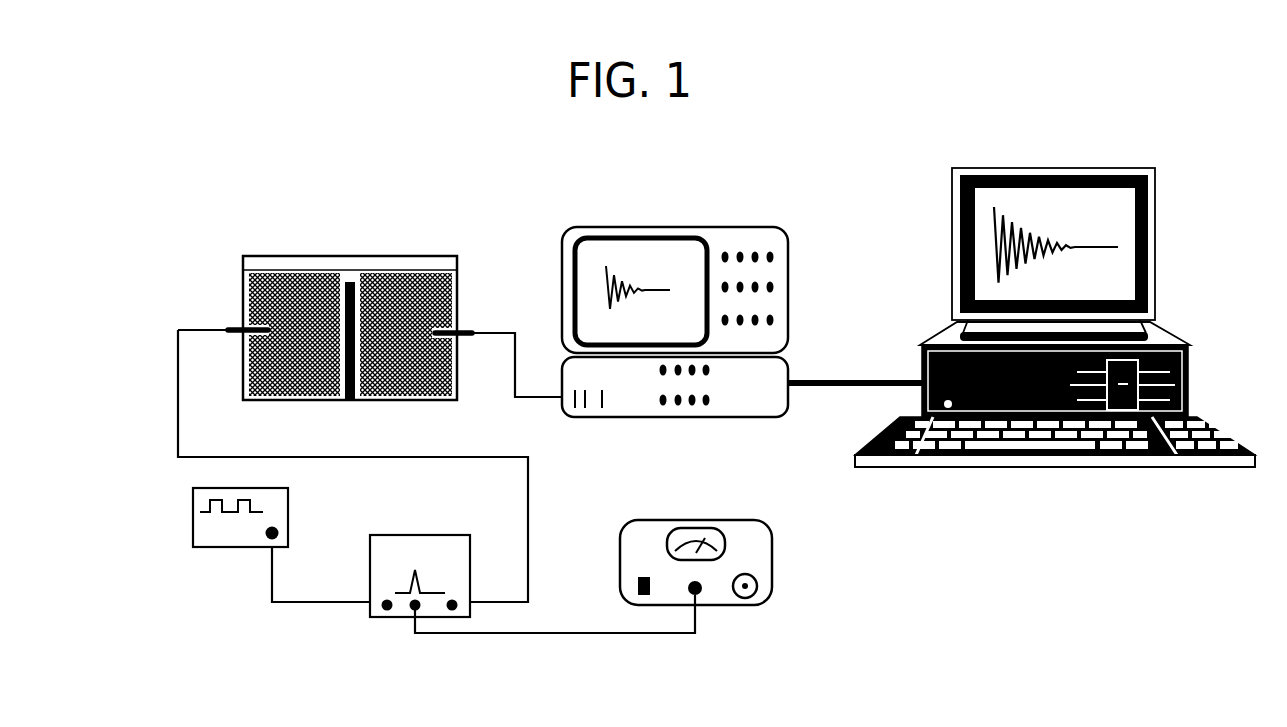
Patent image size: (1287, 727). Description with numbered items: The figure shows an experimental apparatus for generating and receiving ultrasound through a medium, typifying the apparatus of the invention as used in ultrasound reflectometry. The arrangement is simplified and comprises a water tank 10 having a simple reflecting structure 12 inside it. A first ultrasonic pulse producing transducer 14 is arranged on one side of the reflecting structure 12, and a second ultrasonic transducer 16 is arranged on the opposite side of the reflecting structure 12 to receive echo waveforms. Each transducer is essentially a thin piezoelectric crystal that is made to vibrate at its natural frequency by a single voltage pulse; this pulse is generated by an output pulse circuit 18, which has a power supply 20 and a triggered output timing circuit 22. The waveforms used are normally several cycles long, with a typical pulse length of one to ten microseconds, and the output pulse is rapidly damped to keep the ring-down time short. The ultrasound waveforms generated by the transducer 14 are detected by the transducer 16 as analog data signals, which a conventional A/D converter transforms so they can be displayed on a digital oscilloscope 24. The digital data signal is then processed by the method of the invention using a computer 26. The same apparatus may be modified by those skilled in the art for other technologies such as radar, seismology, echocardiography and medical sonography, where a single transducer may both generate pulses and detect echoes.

The water tank 10 is at (286, 232).
The reflecting structure 12 is at (358, 288).
The first ultrasonic pulse producing transducer 14 is at (228, 330).
The second ultrasonic transducer 16 is at (466, 328).
The output pulse circuit 18 is at (405, 535).
The power supply 20 is at (668, 520).
The triggered output timing circuit 22 is at (193, 520).
The digital oscilloscope 24 is at (639, 227).
The computer 26 is at (1027, 168).